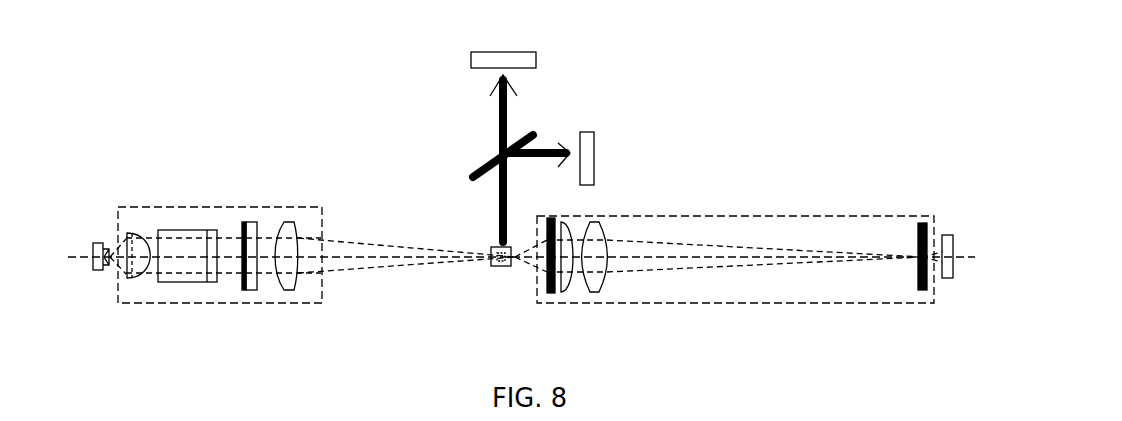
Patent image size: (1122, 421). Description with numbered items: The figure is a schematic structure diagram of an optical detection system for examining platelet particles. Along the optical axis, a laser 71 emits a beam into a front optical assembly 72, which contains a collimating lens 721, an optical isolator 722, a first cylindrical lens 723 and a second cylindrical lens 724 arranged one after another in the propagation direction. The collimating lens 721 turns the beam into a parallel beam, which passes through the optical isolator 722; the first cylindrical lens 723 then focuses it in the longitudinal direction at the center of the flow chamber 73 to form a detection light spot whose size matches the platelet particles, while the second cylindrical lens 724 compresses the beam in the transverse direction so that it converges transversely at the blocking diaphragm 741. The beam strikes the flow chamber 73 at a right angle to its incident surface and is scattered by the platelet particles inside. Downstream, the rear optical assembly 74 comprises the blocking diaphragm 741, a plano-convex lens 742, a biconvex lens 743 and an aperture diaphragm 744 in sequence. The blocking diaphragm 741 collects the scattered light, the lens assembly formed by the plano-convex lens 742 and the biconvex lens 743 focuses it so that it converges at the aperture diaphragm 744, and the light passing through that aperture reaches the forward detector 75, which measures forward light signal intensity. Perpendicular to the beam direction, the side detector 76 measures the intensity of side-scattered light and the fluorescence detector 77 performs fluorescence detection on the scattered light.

The laser 71 is at (97, 272).
The front optical assembly 72 is at (267, 207).
The collimating lens 721 is at (132, 279).
The optical isolator 722 is at (200, 283).
The first cylindrical lens 723 is at (253, 291).
The second cylindrical lens 724 is at (290, 291).
The flow chamber 73 is at (493, 267).
The rear optical assembly 74 is at (797, 216).
The blocking diaphragm 741 is at (552, 294).
The plano-convex lens 742 is at (567, 293).
The biconvex lens 743 is at (600, 293).
The aperture diaphragm 744 is at (922, 291).
The forward detector 75 is at (950, 279).
The side detector 76 is at (592, 143).
The fluorescence detector 77 is at (535, 53).